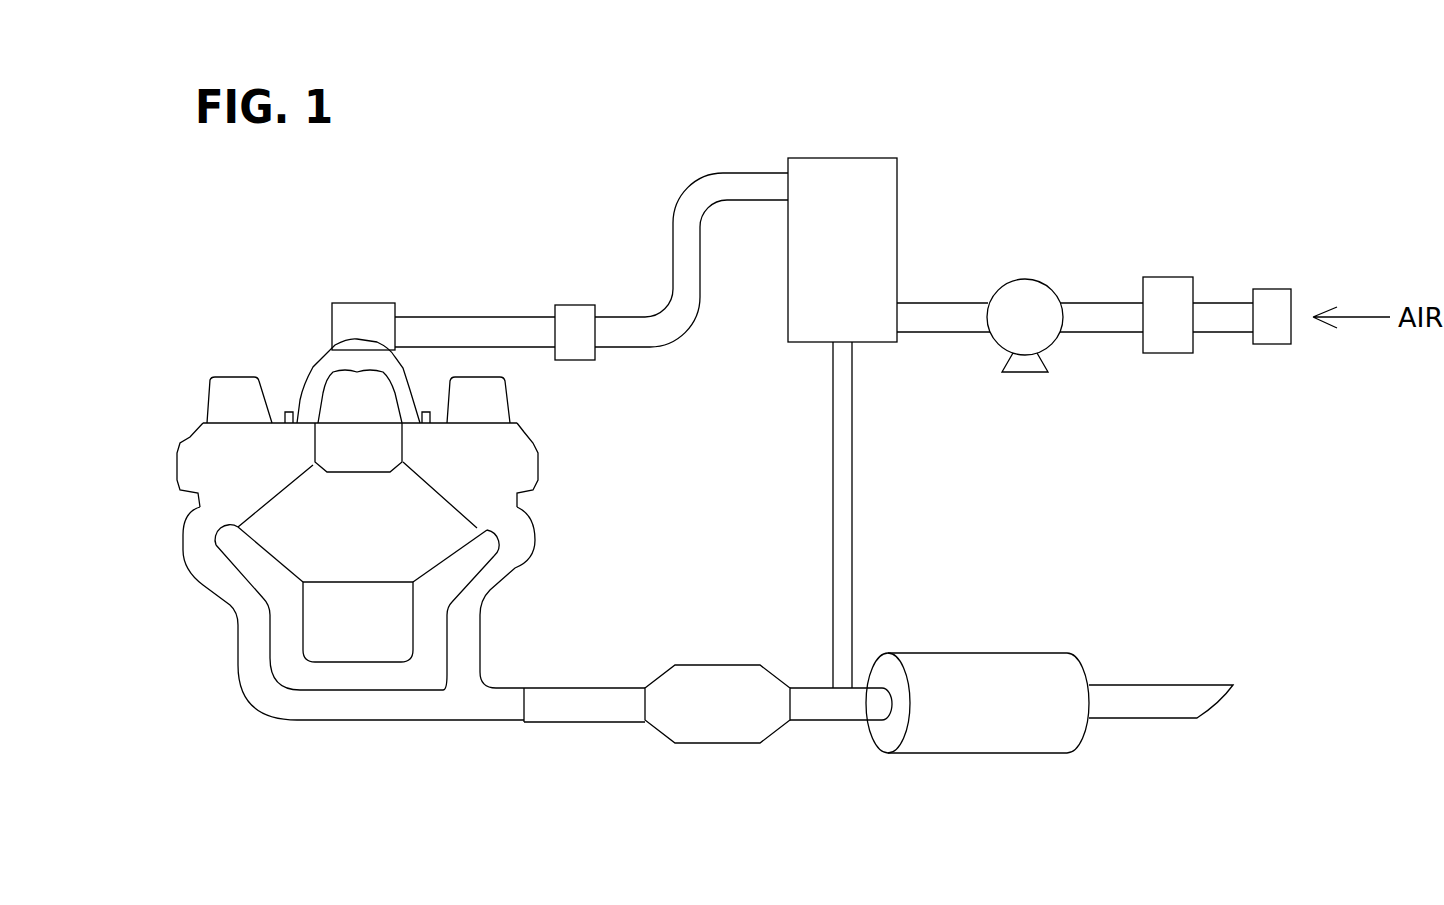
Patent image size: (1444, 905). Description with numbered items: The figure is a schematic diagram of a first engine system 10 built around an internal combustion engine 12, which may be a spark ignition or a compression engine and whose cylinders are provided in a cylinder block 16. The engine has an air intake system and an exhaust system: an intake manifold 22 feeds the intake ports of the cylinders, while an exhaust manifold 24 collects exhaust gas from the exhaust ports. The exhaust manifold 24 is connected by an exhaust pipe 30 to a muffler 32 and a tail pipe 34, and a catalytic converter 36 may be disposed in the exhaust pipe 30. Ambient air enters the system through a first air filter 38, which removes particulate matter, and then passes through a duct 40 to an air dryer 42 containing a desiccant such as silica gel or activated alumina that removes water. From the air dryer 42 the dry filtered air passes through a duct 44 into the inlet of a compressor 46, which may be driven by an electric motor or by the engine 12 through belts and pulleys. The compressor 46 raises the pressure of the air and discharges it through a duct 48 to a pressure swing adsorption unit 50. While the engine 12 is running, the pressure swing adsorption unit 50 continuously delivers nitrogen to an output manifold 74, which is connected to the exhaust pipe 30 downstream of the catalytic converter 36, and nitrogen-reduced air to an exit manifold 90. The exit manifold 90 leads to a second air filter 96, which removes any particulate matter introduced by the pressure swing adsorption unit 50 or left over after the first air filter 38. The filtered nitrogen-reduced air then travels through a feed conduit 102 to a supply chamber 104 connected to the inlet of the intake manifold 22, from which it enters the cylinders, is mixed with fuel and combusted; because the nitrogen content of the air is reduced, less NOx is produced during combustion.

The first engine system 10 is at (1115, 208).
The internal combustion engine 12 is at (590, 451).
The cylinder block 16 is at (400, 530).
The intake manifold 22 is at (332, 355).
The exhaust manifold 24 is at (387, 710).
The exhaust pipe 30 is at (577, 712).
The muffler 32 is at (980, 742).
The tail pipe 34 is at (1142, 708).
The catalytic converter 36 is at (738, 683).
The first air filter 38 is at (1270, 297).
The duct 40 is at (1213, 325).
The air dryer 42 is at (1163, 285).
The duct 44 is at (1097, 323).
The compressor 46 is at (1015, 332).
The duct 48 is at (937, 307).
The pressure swing adsorption (PSA) unit 50 is at (835, 180).
The output manifold 74 is at (847, 542).
The exit manifold 90 is at (720, 180).
The second air filter 96 is at (578, 325).
The feed conduit 102 is at (470, 325).
The supply chamber 104 is at (360, 310).